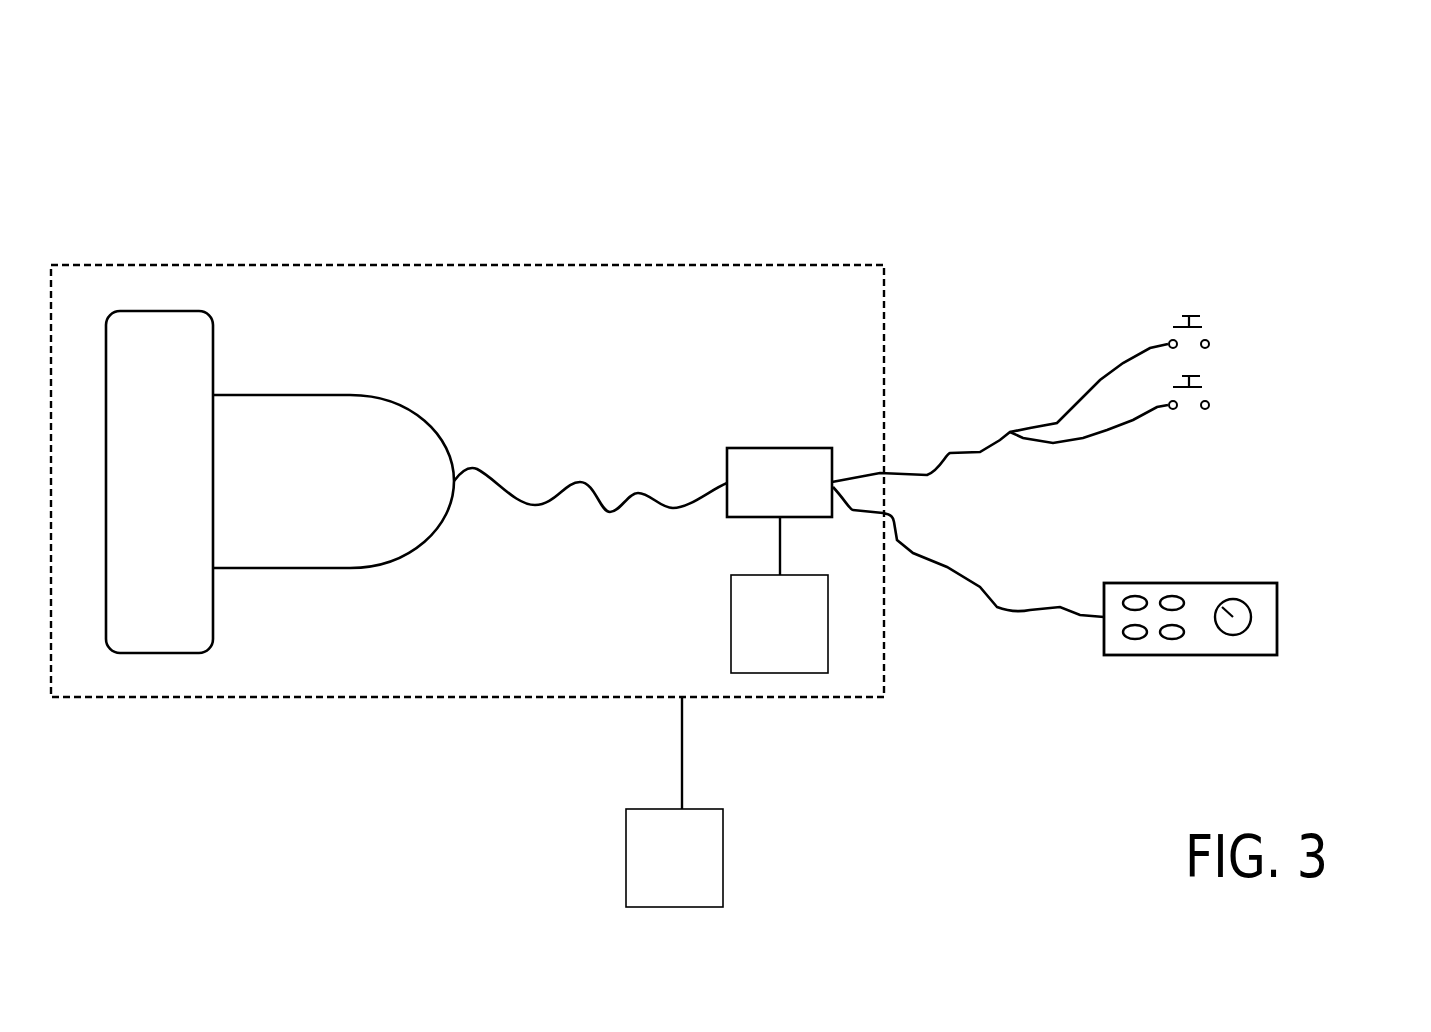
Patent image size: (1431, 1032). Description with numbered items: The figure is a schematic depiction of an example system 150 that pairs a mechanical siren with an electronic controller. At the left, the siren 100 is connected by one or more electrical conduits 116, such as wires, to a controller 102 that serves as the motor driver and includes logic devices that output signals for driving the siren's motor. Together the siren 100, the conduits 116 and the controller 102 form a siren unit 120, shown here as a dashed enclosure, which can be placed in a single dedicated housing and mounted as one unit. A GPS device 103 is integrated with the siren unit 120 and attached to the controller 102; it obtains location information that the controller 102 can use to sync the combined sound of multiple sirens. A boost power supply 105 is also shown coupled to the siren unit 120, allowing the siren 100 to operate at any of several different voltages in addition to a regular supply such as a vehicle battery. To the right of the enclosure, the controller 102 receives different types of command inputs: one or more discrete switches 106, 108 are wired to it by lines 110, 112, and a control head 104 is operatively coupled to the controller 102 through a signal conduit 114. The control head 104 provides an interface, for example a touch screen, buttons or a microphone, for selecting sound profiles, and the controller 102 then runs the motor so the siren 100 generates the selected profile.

The system 150 is at (235, 115).
The siren unit 120 is at (577, 265).
The siren 100 is at (287, 395).
The electrical conduits 116 is at (568, 490).
The controller 102 is at (780, 447).
The global positioning system (GPS) device 103 is at (803, 639).
The boost power supply 105 is at (697, 872).
The first wire 110 is at (1095, 392).
The second wire 112 is at (1107, 433).
The discrete switch 106 is at (1207, 314).
The discrete switch 108 is at (1203, 370).
The signal conduit 114 is at (995, 603).
The control head 104 is at (1277, 620).